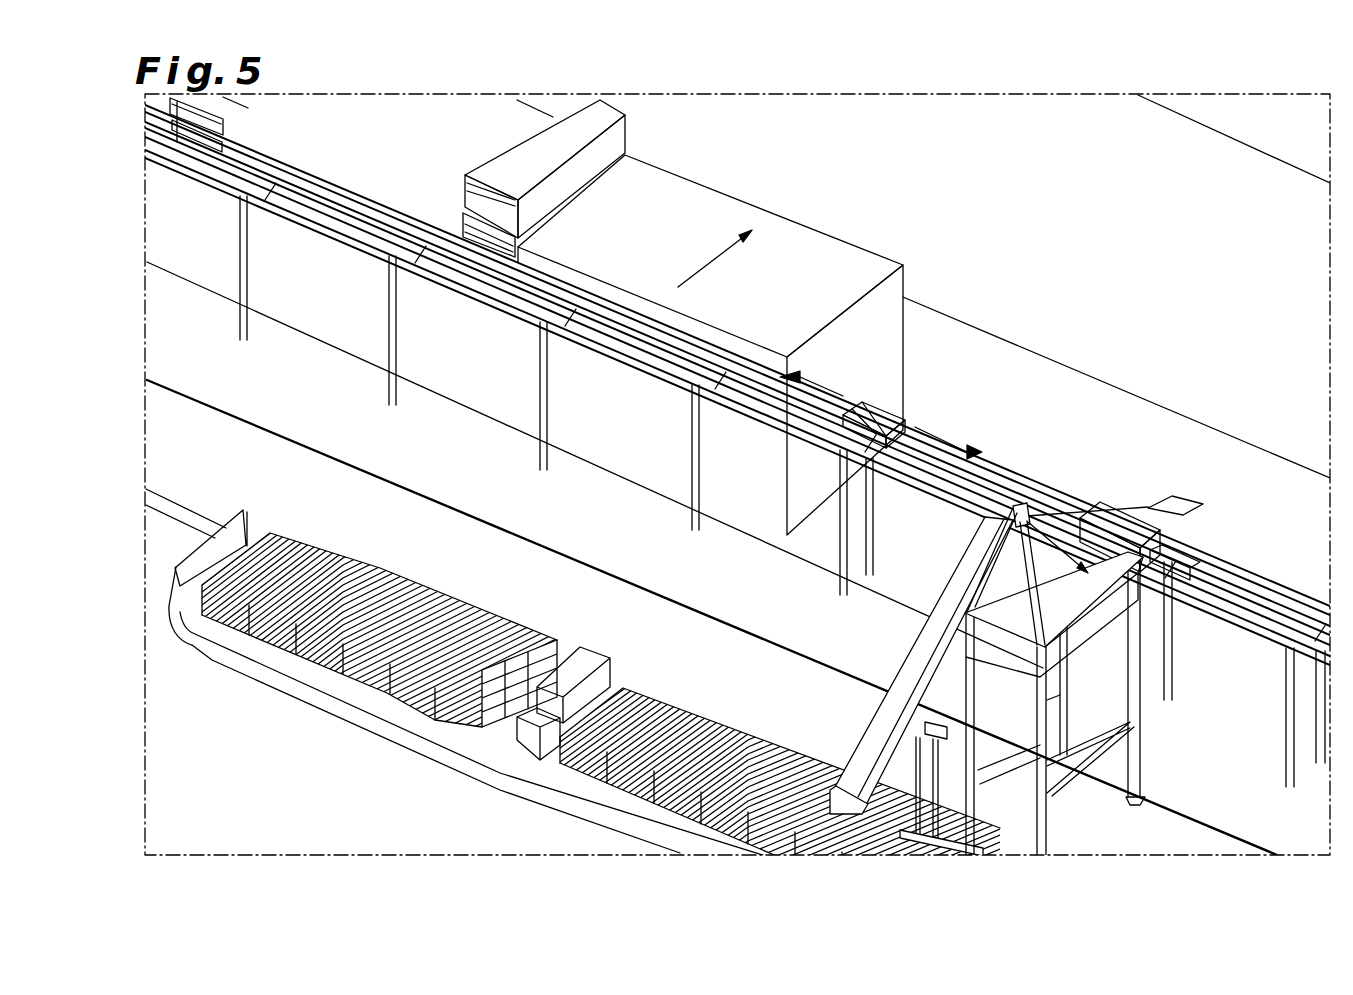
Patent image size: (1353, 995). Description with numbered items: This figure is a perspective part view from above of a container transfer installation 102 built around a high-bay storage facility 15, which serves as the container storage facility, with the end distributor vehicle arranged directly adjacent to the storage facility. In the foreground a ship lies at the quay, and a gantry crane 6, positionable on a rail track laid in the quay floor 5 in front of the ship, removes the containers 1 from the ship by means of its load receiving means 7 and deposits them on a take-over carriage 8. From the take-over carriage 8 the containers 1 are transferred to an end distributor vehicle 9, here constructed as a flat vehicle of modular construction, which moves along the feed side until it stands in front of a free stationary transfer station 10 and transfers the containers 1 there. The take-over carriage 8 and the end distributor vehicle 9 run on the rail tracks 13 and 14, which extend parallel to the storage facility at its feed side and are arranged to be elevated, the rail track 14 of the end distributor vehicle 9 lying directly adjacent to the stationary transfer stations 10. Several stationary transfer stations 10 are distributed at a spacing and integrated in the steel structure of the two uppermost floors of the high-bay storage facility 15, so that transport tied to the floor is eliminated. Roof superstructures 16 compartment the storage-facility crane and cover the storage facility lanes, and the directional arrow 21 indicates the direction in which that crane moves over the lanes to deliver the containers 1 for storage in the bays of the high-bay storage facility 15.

The containers 1 is at (690, 716).
The quay floor 5 is at (792, 702).
The gantry crane 6 is at (1130, 692).
The load receiving means 7 is at (945, 737).
The take-over carriage 8 is at (1213, 560).
The end distributor vehicle 9 is at (878, 417).
The stationary transfer station 10 is at (192, 125).
The rail track 13 is at (1262, 608).
The rail track 14 is at (1255, 582).
The high-bay storage facility 15 is at (828, 230).
The roof superstructures 16 is at (572, 142).
The directional arrow 21 is at (719, 260).
The container transfer installation 102 is at (1108, 213).